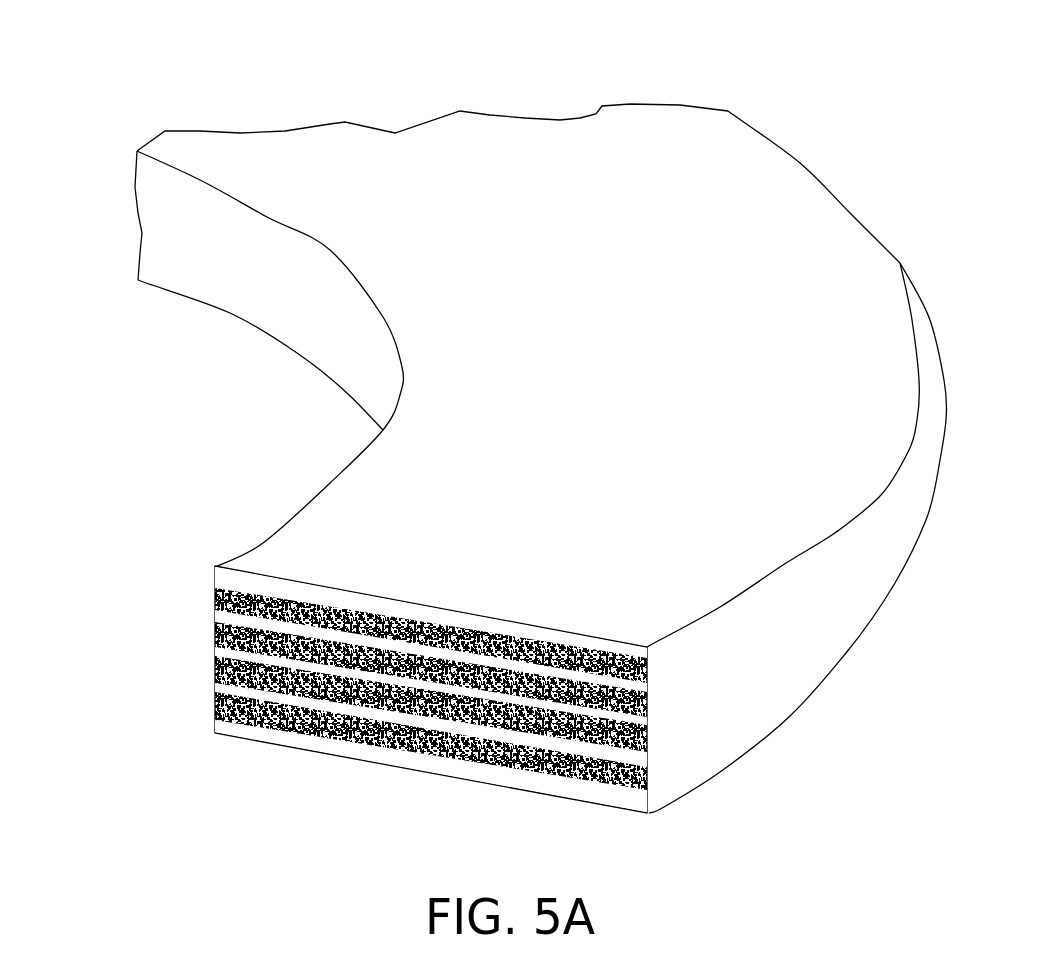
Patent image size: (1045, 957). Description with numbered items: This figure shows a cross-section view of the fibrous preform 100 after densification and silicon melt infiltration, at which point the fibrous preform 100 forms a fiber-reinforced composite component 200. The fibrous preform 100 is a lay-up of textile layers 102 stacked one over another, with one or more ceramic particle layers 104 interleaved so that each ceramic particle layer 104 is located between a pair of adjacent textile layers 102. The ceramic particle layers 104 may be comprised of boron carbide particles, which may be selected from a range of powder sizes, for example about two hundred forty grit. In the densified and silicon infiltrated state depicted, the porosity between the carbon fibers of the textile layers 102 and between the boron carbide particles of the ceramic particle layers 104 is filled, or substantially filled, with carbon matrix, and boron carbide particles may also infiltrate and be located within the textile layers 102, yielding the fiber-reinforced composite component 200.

The fibrous preform 100 is at (84, 82).
The fiber-reinforced composite component 200 is at (262, 265).
The textile layers 102 is at (350, 600).
The ceramic particle layers 104 is at (698, 835).